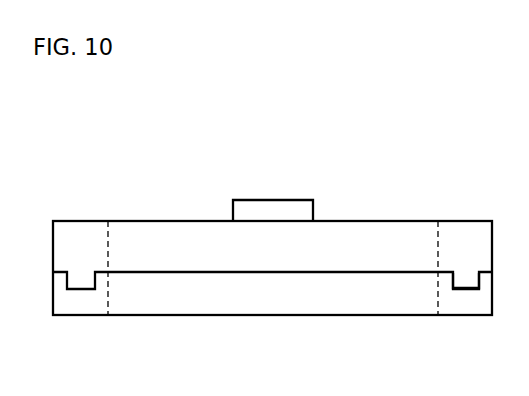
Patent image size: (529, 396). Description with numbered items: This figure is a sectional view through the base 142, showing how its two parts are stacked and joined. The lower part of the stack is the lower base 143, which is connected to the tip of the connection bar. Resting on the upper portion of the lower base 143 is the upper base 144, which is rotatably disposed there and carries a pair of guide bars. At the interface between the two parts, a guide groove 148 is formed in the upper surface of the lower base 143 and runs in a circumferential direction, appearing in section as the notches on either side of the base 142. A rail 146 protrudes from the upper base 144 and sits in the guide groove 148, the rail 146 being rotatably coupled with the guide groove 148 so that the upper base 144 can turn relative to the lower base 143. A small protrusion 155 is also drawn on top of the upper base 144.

The base 142 is at (198, 199).
The lower base 143 is at (303, 310).
The upper base 144 is at (395, 226).
The rail 146 is at (458, 280).
The guide groove 148 is at (472, 315).
The protrusion 155 is at (273, 203).